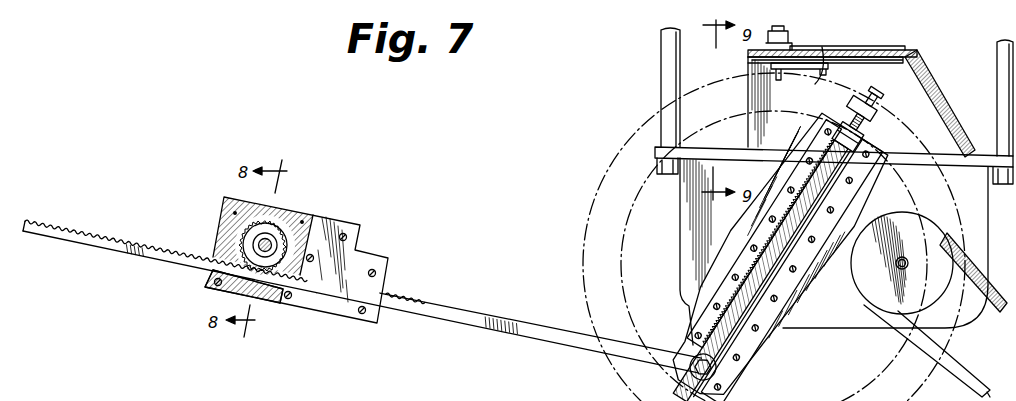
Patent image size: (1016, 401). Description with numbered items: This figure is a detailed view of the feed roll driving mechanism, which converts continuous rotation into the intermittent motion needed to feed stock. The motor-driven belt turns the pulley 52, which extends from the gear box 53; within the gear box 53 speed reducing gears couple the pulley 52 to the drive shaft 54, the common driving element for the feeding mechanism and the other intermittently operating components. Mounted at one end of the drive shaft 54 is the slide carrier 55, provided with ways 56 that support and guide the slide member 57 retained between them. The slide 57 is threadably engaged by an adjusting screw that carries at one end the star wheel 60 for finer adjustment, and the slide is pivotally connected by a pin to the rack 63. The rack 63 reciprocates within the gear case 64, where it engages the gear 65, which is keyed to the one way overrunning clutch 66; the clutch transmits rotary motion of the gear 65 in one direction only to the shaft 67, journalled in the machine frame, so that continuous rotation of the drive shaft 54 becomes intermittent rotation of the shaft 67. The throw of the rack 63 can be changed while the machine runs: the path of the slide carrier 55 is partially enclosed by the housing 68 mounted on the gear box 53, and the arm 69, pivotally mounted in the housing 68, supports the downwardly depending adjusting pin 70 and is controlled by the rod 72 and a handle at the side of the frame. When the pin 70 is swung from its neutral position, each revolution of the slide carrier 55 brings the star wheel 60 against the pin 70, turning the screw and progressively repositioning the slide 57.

The pulley 52 is at (937, 253).
The gear box 53 is at (975, 214).
The drive shaft 54 is at (793, 287).
The slide carrier 55 is at (783, 323).
The ways 56 is at (750, 317).
The slide member 57 is at (733, 333).
The star wheel 60 is at (871, 101).
The rack 63 is at (563, 345).
The gear case 64 is at (358, 224).
The gear 65 is at (270, 243).
The one way overrunning clutch 66 is at (265, 399).
The shaft 67 is at (262, 254).
The housing 68 is at (935, 81).
The arm 69 is at (822, 66).
The adjusting pin 70 is at (773, 66).
The rod 72 is at (790, 38).